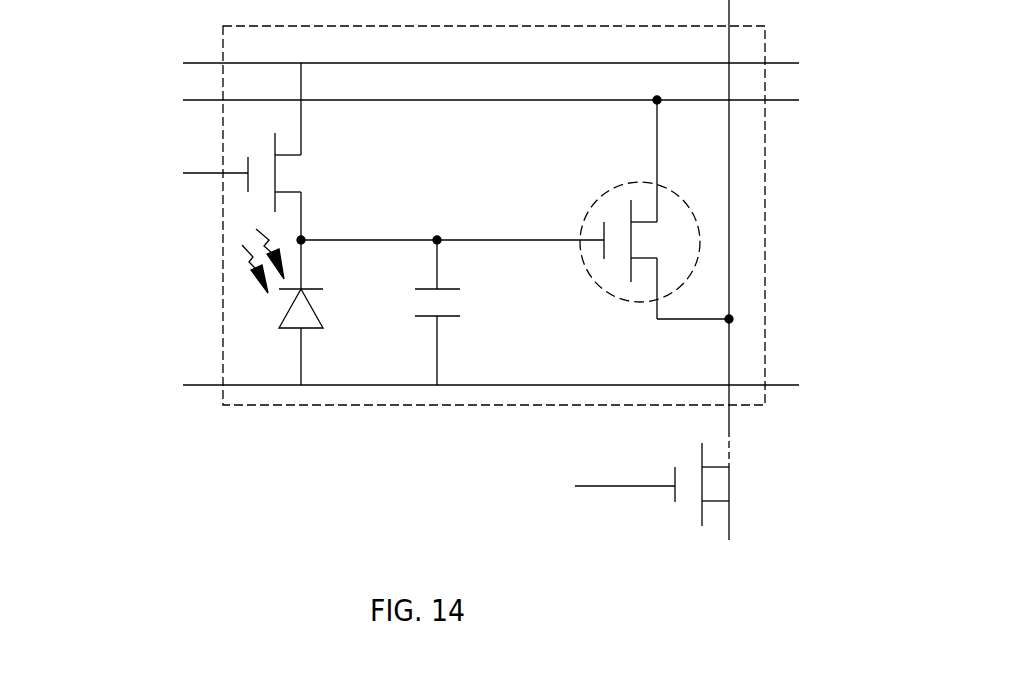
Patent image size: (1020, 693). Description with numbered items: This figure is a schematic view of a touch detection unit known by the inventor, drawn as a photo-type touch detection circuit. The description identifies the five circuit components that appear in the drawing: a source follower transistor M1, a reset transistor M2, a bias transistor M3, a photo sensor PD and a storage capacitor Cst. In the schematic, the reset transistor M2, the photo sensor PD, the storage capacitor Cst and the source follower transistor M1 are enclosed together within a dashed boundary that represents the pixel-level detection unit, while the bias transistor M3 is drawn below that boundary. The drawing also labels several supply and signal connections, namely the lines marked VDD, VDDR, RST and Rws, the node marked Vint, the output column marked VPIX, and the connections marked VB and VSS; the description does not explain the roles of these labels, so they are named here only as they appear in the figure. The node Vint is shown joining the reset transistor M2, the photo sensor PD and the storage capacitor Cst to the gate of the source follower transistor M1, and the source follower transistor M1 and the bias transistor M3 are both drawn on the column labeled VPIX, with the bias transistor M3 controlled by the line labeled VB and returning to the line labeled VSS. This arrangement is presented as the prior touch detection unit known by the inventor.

The source follower transistor M1 is at (656, 211).
The reset transistor M2 is at (291, 151).
The bias transistor M3 is at (718, 491).
The photo sensor PD is at (298, 307).
The storage capacitor Cst is at (452, 312).
The supply voltage line VDD is at (463, 101).
The reset supply voltage line (VDDR=VSS) VDDR is at (423, 65).
The reset signal line RST is at (190, 175).
The row select line Rws is at (465, 386).
The integration node voltage Vint is at (450, 230).
The pixel output line VPIX is at (729, 423).
The bias voltage VB is at (608, 490).
The ground voltage VSS is at (728, 558).